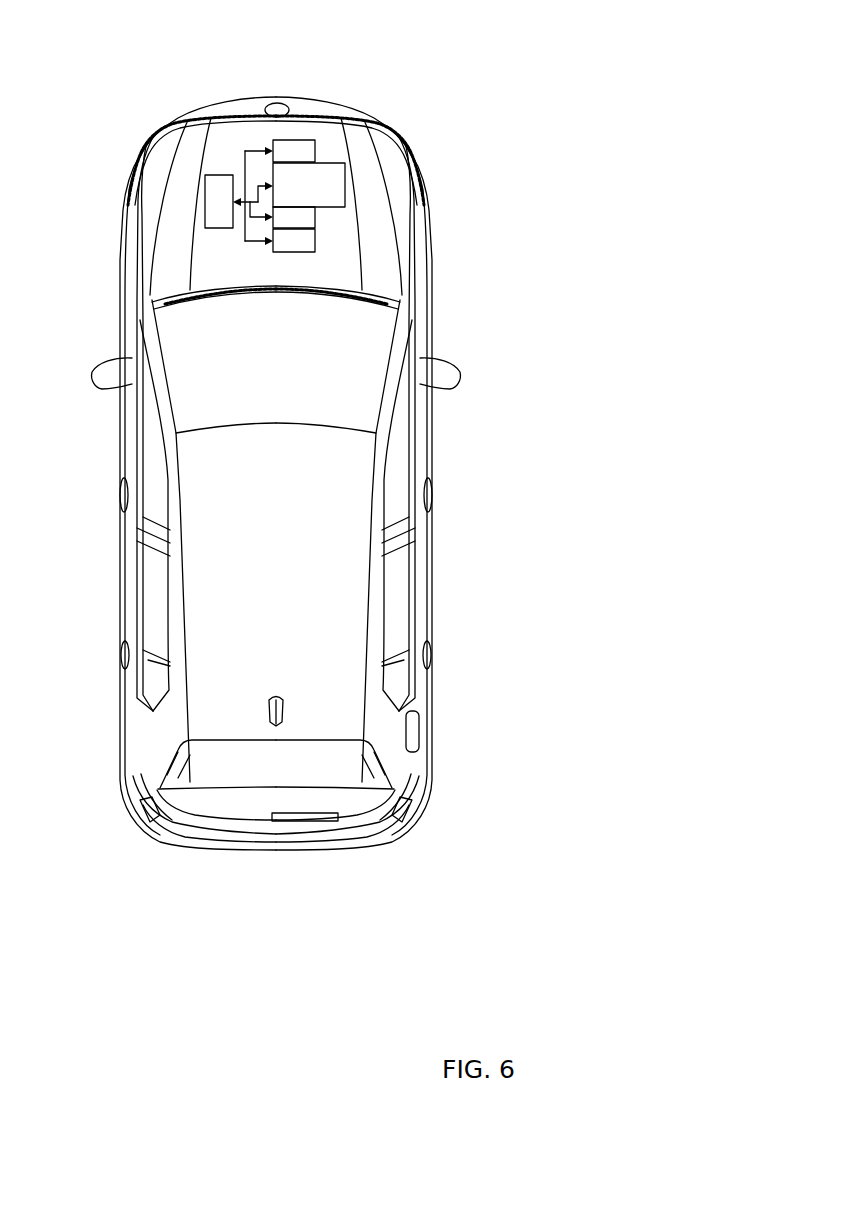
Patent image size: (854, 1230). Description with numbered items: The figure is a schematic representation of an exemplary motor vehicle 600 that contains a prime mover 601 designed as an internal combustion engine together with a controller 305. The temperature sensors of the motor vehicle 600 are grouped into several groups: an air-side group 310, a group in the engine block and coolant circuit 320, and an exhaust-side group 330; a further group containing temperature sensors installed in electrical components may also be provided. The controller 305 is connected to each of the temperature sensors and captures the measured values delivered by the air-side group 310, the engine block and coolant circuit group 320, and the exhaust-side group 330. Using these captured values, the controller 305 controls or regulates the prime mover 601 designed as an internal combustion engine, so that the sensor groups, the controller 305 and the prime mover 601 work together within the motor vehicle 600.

The motor vehicle 600 is at (490, 67).
The controller 305 is at (203, 202).
The air-side temperature sensor group 310 is at (293, 139).
The prime mover 601 is at (345, 188).
The engine block and coolant circuit temperature sensor group 320 is at (317, 218).
The exhaust-side temperature sensor group 330 is at (317, 240).